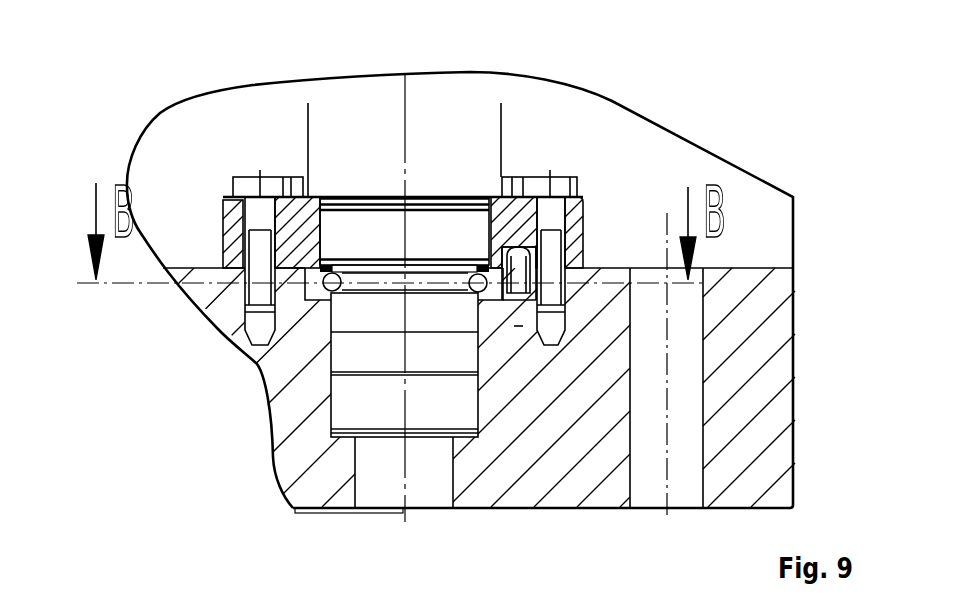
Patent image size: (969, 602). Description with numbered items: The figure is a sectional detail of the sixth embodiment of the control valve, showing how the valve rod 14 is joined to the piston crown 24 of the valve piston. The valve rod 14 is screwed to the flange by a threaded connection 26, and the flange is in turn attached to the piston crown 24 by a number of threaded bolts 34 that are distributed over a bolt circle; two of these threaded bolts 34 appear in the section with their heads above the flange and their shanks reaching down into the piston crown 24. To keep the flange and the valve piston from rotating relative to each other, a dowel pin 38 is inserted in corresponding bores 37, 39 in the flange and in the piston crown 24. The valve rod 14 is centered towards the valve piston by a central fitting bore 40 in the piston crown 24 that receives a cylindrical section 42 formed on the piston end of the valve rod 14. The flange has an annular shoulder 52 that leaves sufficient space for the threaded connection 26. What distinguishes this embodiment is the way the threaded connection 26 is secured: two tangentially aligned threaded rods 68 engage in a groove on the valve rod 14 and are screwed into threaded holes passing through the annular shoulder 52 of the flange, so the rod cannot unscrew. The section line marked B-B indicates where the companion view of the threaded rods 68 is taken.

The valve rod 14 is at (437, 93).
The piston crown 24 is at (603, 316).
The threaded connection 26 is at (320, 252).
The threaded bolts 34 is at (242, 185).
The bore 37 is at (497, 287).
The dowel pin 38 is at (518, 330).
The bore 39 is at (577, 199).
The central fitting bore 40 is at (358, 408).
The cylindrical section 42 is at (338, 427).
The annular shoulder 52 is at (568, 268).
The threaded rods 68 is at (330, 296).